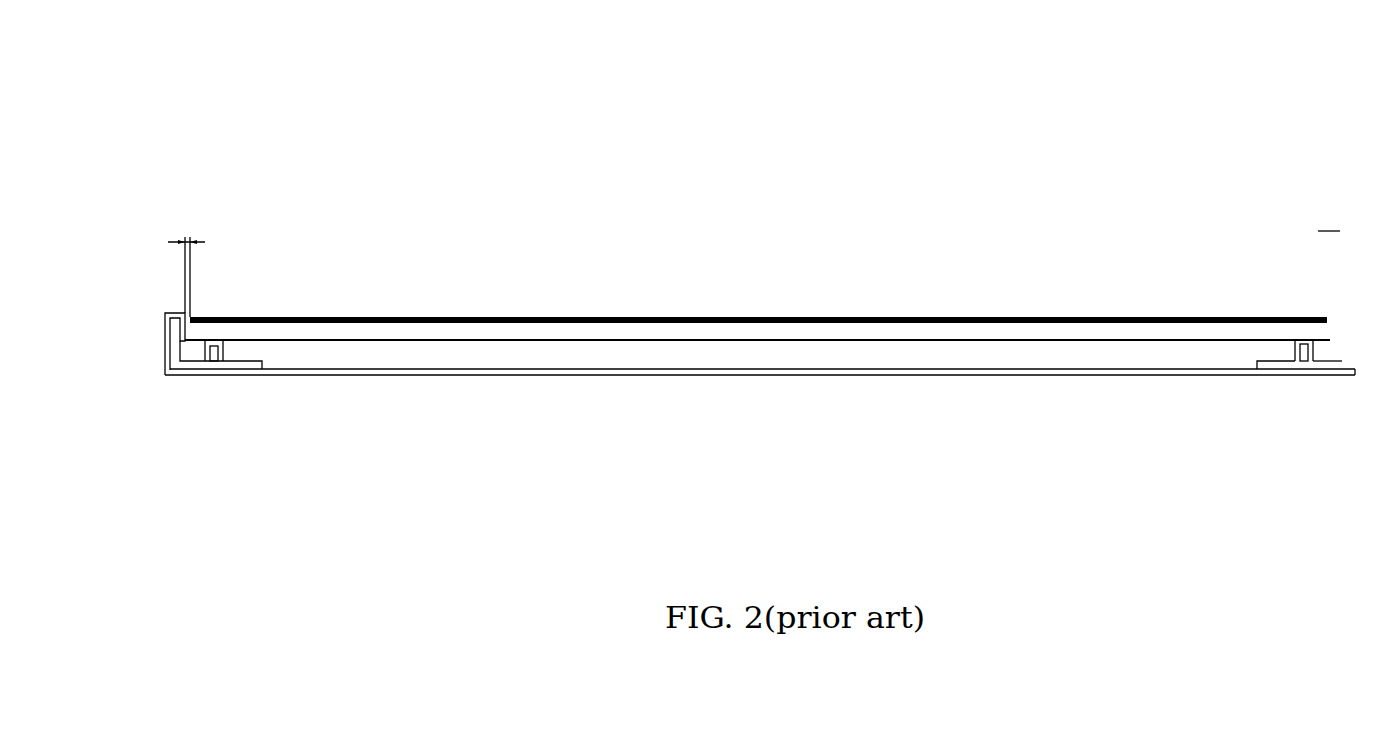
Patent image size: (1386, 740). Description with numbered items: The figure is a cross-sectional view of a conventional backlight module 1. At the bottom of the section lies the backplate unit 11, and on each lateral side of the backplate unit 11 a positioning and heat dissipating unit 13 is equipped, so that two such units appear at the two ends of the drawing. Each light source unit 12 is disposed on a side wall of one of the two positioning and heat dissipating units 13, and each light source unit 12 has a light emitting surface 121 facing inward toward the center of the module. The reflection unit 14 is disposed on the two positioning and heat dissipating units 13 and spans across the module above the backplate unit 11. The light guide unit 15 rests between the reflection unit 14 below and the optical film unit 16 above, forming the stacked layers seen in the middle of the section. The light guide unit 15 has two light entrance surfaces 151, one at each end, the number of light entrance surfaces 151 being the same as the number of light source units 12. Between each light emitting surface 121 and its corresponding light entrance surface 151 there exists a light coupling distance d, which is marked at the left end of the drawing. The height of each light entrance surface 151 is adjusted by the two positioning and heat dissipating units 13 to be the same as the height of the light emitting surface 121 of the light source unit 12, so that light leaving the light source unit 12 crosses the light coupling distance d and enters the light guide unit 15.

The backlight module 1 is at (350, 106).
The light coupling distance d is at (186, 266).
The backplate unit 11 is at (284, 376).
The light source unit 12 is at (184, 312).
The light emitting surface 121 is at (184, 343).
The positioning and heat dissipating unit 13 is at (223, 364).
The reflection unit 14 is at (414, 341).
The light guide unit 15 is at (480, 332).
The light entrance surface 151 is at (186, 334).
The optical film unit 16 is at (470, 317).